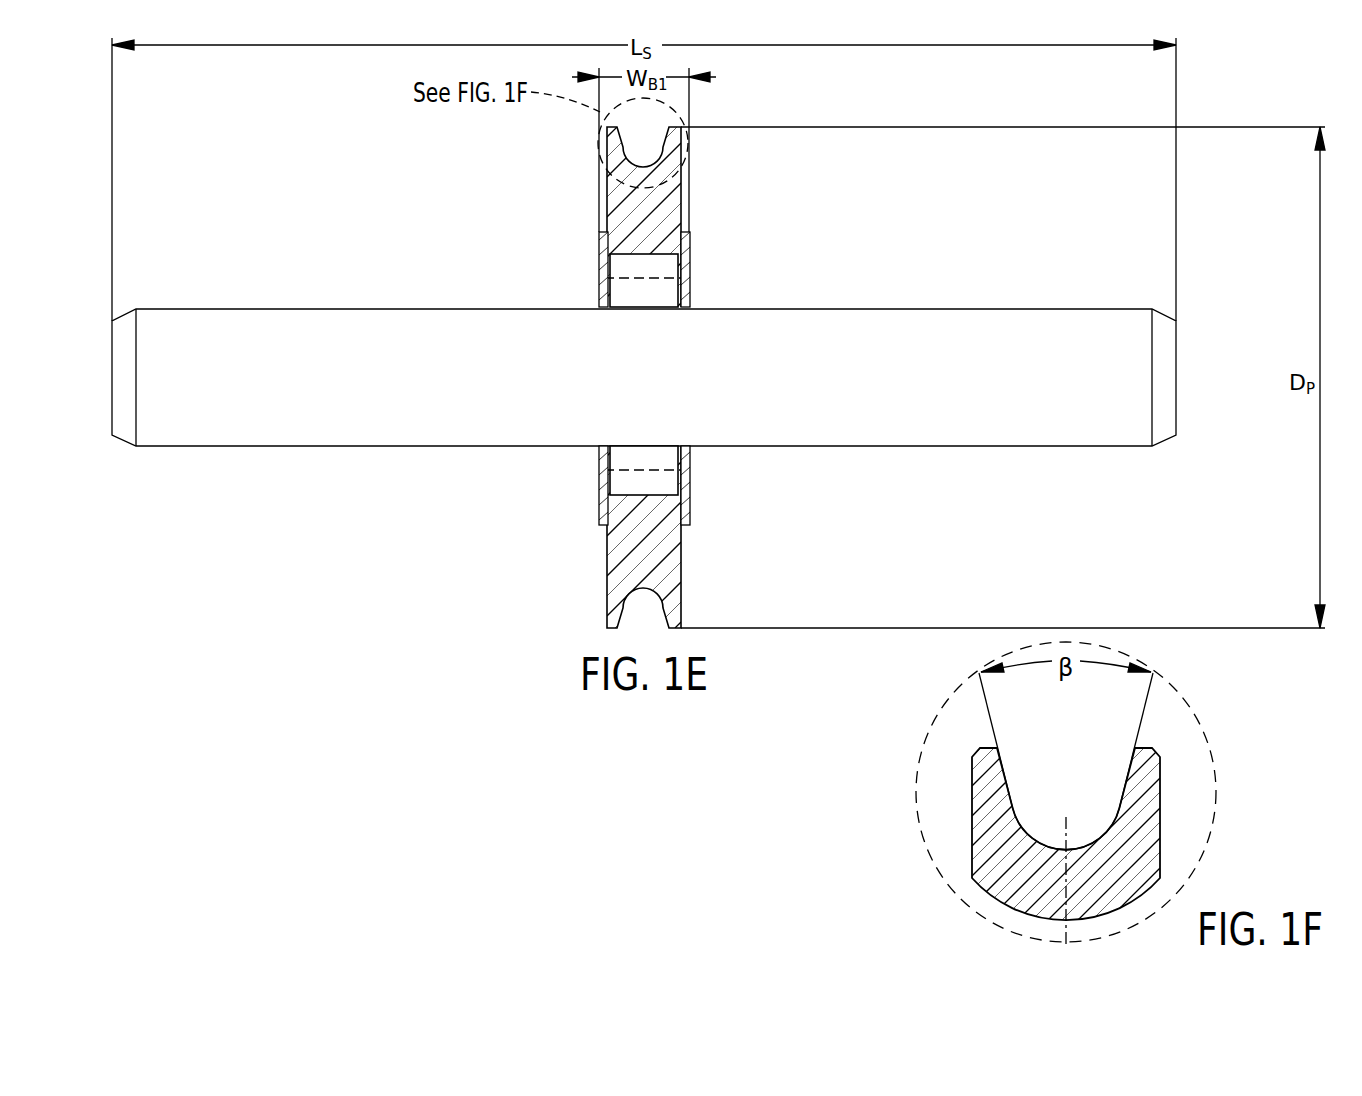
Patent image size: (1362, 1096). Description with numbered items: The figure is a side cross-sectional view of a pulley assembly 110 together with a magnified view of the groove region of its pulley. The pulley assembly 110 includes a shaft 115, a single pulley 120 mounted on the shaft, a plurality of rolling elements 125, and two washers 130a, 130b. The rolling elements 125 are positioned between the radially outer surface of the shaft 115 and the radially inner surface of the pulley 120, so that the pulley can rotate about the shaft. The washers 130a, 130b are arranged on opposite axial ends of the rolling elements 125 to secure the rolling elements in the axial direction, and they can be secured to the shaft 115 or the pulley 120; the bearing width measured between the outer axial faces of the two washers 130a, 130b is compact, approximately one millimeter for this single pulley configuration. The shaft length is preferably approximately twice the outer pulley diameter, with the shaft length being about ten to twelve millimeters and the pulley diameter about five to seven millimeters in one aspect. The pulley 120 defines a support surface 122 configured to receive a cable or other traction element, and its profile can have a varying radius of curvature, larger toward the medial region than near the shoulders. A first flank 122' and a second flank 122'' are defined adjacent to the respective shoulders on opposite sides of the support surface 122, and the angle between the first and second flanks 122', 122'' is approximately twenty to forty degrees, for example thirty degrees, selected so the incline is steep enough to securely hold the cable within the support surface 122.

In FIG. 1E, the pulley assembly 110 is at (920, 313).
In FIG. 1E, the shaft 115 is at (358, 338).
In FIG. 1E, the pulley 120 is at (663, 205).
In FIG. 1F, the pulley 120 is at (1010, 850).
In FIG. 1F, the support surface 122 is at (1155, 804).
In FIG. 1F, the first flank 122' is at (969, 740).
In FIG. 1F, the second flank 122'' is at (1205, 740).
In FIG. 1E, the rolling elements 125 is at (628, 272).
In FIG. 1E, the washer 130a is at (598, 462).
In FIG. 1E, the washer 130b is at (682, 282).